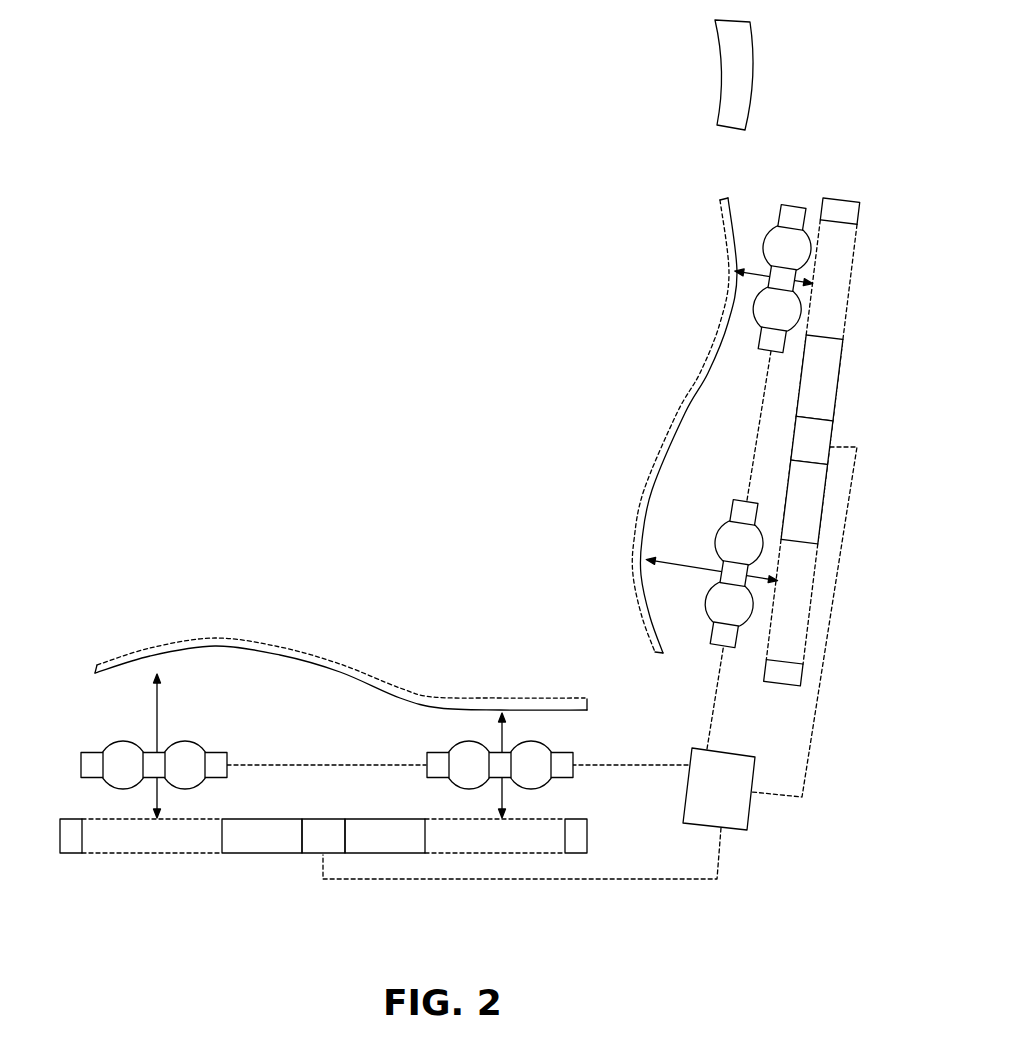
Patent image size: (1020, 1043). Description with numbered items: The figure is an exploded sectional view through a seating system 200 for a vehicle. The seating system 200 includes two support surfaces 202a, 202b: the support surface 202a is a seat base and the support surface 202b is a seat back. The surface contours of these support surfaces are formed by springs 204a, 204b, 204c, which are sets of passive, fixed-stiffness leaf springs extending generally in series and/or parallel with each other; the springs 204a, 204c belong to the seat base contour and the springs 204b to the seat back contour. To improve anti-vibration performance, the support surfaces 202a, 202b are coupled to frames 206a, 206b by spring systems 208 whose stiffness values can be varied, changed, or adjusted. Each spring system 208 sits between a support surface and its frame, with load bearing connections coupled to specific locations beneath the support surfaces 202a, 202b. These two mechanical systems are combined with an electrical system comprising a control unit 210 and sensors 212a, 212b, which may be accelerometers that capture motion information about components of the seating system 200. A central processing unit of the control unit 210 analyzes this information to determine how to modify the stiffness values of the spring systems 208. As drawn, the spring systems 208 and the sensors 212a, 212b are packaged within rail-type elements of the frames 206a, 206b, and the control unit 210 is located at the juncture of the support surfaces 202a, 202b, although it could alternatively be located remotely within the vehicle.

The seating system 200 is at (383, 190).
The support surface (seat base) 202a is at (379, 677).
The support surface (seat back) 202b is at (673, 413).
The springs 204a is at (223, 637).
The springs 204b is at (637, 605).
The springs 204c is at (435, 697).
The frame 206a is at (72, 855).
The frame 206b is at (858, 217).
The spring systems 208 is at (763, 233).
The control unit 210 is at (750, 808).
The sensors 212a is at (317, 855).
The sensors 212b is at (833, 437).